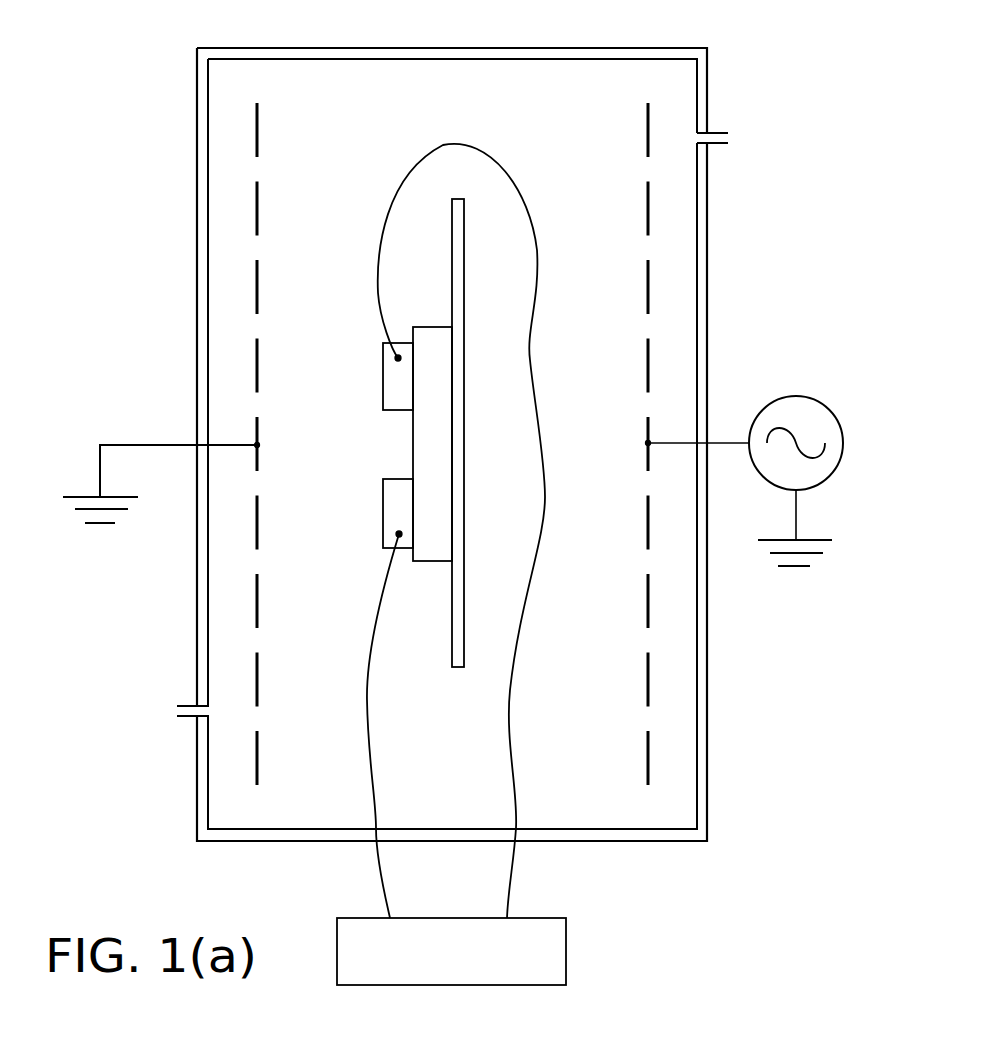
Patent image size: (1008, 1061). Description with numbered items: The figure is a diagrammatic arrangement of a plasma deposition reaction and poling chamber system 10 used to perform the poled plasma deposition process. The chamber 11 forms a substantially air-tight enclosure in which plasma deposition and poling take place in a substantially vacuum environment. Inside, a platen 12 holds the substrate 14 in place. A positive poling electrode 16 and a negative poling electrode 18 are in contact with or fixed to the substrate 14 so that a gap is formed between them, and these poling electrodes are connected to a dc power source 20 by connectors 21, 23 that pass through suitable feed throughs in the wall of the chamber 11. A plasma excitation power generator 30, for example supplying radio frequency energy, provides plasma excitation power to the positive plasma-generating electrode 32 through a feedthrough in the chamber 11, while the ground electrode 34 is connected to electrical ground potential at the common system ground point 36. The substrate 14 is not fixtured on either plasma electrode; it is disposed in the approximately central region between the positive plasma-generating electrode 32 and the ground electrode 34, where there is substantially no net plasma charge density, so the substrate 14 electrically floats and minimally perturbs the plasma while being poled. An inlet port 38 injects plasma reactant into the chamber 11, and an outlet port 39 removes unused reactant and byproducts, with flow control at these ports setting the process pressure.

The plasma deposition reaction and poling chamber system 10 is at (748, 52).
The chamber 11 is at (702, 263).
The platen 12 is at (457, 288).
The substrate 14 is at (432, 543).
The positive poling electrode 16 is at (399, 488).
The negative poling electrode 18 is at (400, 407).
The dc power source 20 is at (557, 935).
The connector 21 is at (365, 762).
The connector 23 is at (538, 315).
The plasma excitation power generator 30 is at (792, 387).
The positive plasma-generating electrode 32 is at (643, 150).
The ground electrode 34 is at (262, 140).
The common system ground point 36 is at (62, 517).
The inlet port 38 is at (728, 138).
The outlet port 39 is at (177, 712).